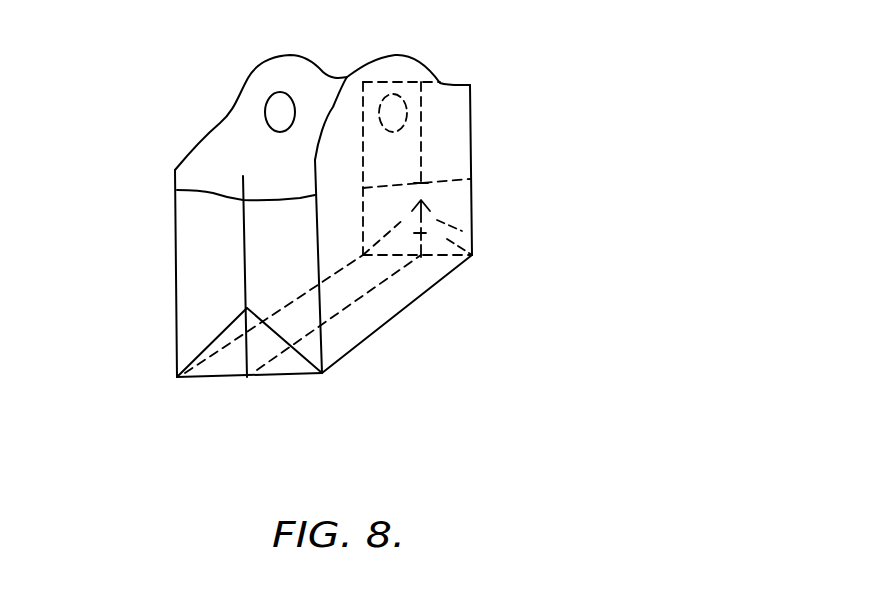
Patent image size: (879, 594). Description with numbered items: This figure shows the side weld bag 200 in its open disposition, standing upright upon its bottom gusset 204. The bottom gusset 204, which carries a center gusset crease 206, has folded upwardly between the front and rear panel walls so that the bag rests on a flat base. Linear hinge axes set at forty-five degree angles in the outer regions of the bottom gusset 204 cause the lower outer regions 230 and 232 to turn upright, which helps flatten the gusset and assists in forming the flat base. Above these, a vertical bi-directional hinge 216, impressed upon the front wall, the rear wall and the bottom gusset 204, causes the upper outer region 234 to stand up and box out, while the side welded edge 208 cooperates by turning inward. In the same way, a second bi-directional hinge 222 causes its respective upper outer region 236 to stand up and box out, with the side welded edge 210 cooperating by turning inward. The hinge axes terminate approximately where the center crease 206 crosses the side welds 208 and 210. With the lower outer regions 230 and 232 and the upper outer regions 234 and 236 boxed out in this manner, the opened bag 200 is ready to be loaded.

The side weld bag 200 is at (414, 310).
The bottom gusset 204 is at (415, 283).
The center gusset crease 206 is at (343, 310).
The side welded edge 208 is at (243, 268).
The side welded edge 210 is at (422, 112).
The vertical bi-directional hinge 216 is at (177, 190).
The bi-directional hinge 222 is at (470, 179).
The lower outer region 230 is at (272, 360).
The lower outer region 232 is at (460, 228).
The upper outer region 234 is at (283, 225).
The upper outer region 236 is at (400, 152).